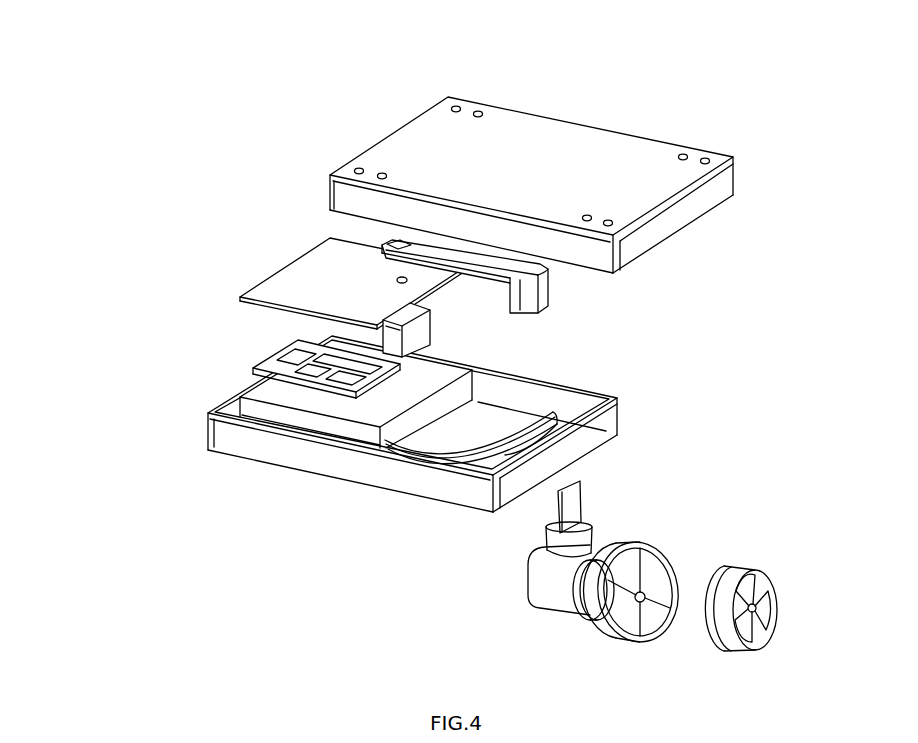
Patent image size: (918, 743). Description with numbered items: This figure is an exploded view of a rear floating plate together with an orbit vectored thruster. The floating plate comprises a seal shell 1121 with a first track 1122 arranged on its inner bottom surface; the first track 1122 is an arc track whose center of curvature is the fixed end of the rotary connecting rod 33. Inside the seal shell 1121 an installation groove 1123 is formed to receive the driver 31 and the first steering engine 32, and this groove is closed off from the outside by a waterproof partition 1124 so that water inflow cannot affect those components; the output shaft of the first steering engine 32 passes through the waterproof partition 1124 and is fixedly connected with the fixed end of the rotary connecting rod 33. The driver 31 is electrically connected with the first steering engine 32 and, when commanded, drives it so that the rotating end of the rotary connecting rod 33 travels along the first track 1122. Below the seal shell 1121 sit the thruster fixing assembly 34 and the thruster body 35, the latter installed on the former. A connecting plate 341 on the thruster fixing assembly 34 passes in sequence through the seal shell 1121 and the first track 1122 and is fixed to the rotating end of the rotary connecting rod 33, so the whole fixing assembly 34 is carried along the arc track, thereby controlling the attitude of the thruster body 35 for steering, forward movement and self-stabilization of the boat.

The seal shell 1121 is at (618, 157).
The first track 1122 is at (458, 460).
The installation groove 1123 is at (270, 387).
The waterproof partition 1124 is at (300, 273).
The driver 31 is at (268, 358).
The first steering engine 32 is at (420, 328).
The rotary connecting rod 33 is at (538, 292).
The thruster fixing assembly 34 is at (645, 543).
The connecting plate 341 is at (567, 513).
The thruster body 35 is at (737, 580).